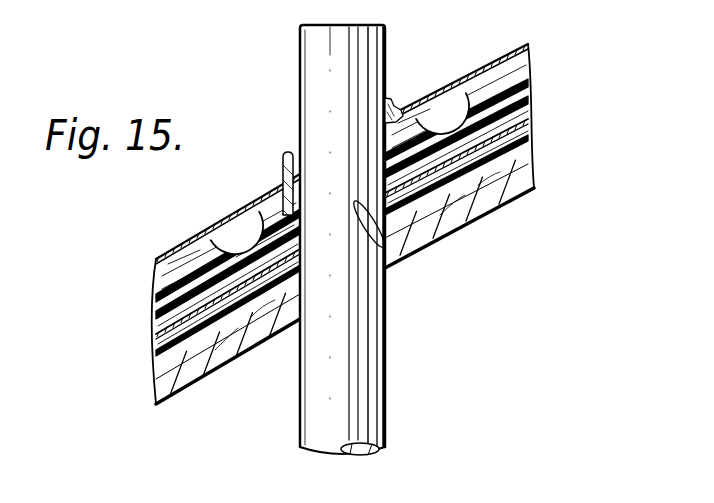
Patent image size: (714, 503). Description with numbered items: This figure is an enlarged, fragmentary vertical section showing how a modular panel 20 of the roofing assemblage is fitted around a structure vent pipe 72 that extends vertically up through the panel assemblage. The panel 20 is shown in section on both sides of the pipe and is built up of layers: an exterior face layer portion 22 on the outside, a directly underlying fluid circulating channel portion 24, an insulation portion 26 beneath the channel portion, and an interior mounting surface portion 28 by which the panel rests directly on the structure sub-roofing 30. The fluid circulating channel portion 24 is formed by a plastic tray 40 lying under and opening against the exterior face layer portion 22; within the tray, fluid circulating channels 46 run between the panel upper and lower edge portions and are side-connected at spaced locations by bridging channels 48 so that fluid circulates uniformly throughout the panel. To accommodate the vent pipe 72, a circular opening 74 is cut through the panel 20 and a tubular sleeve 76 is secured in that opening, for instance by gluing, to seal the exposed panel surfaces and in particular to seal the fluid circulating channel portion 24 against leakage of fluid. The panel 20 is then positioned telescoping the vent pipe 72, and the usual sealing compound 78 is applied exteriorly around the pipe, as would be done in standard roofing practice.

The modular panel 20 is at (163, 244).
The exterior face layer portion 22 is at (160, 263).
The fluid circulating channel portion 24 is at (170, 275).
The plastic tray 40 is at (165, 291).
The insulation portion 26 is at (172, 318).
The interior mounting surface portion 28 is at (175, 345).
The structure sub-roofing 30 is at (525, 164).
The fluid circulating channel 46 is at (176, 252).
The bridging channel 48 is at (243, 225).
The structure vent pipe 72 is at (308, 43).
The circular opening 74 is at (385, 262).
The tubular sleeve 76 is at (389, 100).
The sealing compound 78 is at (285, 160).